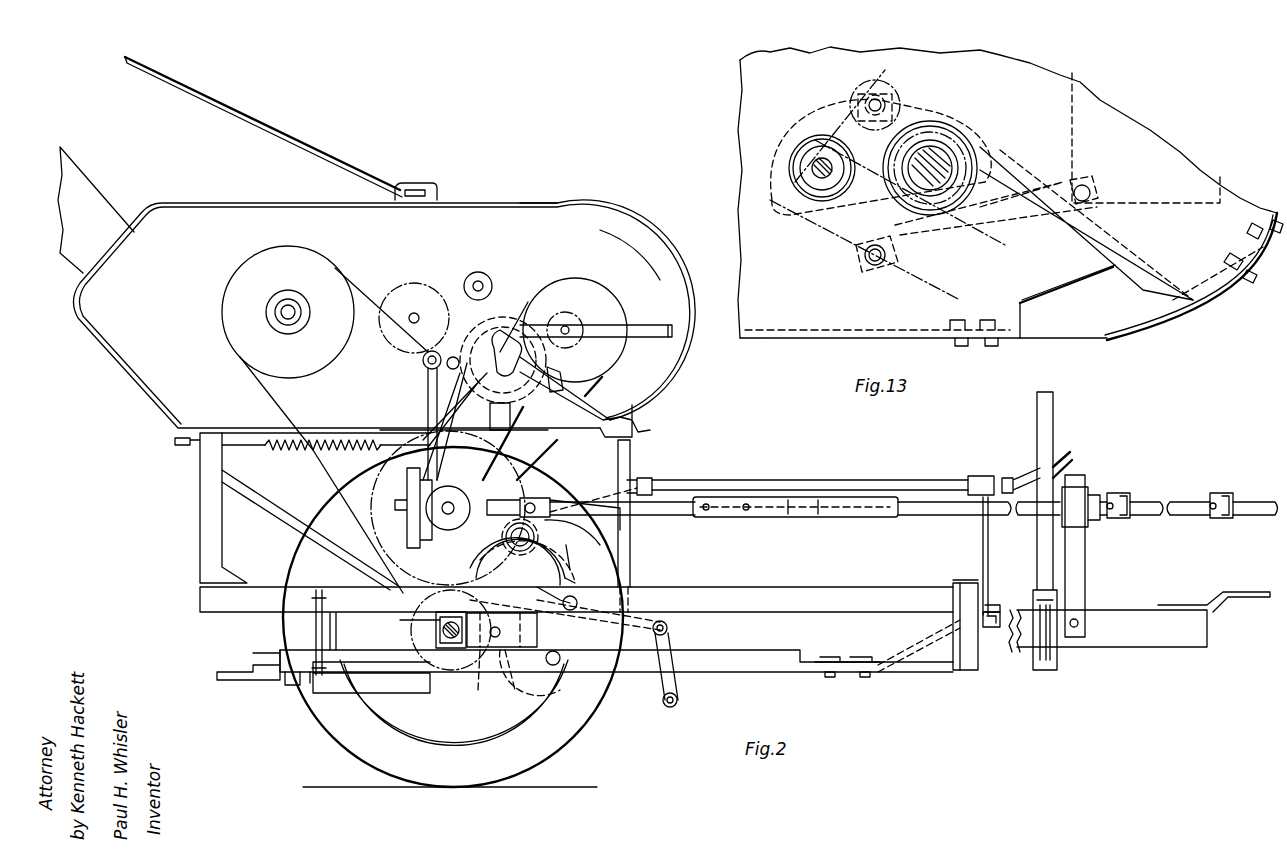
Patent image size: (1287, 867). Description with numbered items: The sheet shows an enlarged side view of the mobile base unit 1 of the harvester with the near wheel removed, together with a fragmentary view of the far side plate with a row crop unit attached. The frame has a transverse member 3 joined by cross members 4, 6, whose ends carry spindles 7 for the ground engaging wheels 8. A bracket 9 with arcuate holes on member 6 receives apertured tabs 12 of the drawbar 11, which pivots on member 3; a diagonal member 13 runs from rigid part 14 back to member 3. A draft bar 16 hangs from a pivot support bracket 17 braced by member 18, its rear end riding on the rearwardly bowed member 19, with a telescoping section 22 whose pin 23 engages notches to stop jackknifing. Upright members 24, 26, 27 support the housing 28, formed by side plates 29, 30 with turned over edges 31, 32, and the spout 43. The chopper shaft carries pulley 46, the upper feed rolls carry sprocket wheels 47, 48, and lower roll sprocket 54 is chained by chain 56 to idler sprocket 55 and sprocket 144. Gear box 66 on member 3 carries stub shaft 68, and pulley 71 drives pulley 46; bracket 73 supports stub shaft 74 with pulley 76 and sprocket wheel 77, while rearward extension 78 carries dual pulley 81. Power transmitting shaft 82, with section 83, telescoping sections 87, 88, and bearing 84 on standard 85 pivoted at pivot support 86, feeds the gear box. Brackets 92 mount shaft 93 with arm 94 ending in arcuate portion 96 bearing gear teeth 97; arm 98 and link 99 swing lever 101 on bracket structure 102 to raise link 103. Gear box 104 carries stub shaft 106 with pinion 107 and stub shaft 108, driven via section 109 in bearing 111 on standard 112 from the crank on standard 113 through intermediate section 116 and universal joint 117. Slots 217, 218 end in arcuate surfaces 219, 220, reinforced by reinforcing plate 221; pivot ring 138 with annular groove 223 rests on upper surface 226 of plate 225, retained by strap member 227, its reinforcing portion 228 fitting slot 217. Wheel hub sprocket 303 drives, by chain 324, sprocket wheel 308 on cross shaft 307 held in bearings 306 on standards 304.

In FIG. 2, the mobile base unit 1 is at (316, 496).
In FIG. 2, the transversely disposed parallel member 3 is at (415, 640).
In FIG. 2, the cross member 4 is at (785, 592).
In FIG. 2, the cross member 6 is at (952, 598).
In FIG. 2, the spindle 7 is at (460, 630).
In FIG. 2, the ground engaging wheel 8 is at (566, 738).
In FIG. 2, the bracket 9 is at (998, 606).
In FIG. 2, the drawbar 11 is at (1010, 648).
In FIG. 2, the apertured tab 12 is at (994, 628).
In FIG. 2, the diagonal member 13 is at (918, 672).
In FIG. 2, the rigid part 14 is at (964, 672).
In FIG. 2, the draft bar 16 is at (728, 672).
In FIG. 2, the pivot support bracket 17 is at (848, 672).
In FIG. 2, the brace member 18 is at (925, 633).
In FIG. 2, the rearwardly bowed member 19 is at (378, 693).
In FIG. 2, the telescoping section 22 is at (270, 650).
In FIG. 2, the lug or pin 23 is at (285, 688).
In FIG. 2, the upwardly extending member 24 is at (200, 503).
In FIG. 2, the upwardly extending member 26 is at (286, 528).
In FIG. 2, the upwardly extending member 27 is at (632, 455).
In FIG. 2, the housing 28 is at (206, 247).
In FIG. 13, the side plate member 29 is at (738, 268).
In FIG. 2, the side plate member 30 is at (540, 206).
In FIG. 13, the turned over edge portion 31 is at (842, 326).
In FIG. 2, the turned over edge portion 32 is at (605, 230).
In FIG. 2, the spout 43 is at (106, 195).
In FIG. 2, the pulley 46 is at (222, 310).
In FIG. 2, the sprocket wheel 47 is at (402, 288).
In FIG. 2, the sprocket wheel 48 is at (480, 272).
In FIG. 13, the sprocket 54 is at (790, 197).
In FIG. 13, the idler sprocket 55 is at (887, 82).
In FIG. 13, the chain 56 is at (838, 110).
In FIG. 2, the gear box 66 is at (412, 528).
In FIG. 2, the stub shaft 68 is at (520, 490).
In FIG. 2, the pulley 71 is at (395, 470).
In FIG. 2, the bracket 73 is at (645, 338).
In FIG. 2, the stub shaft 74 is at (582, 338).
In FIG. 2, the pulley 76 is at (582, 282).
In FIG. 2, the sprocket wheel 77 is at (568, 325).
In FIG. 2, the rearward extension 78 is at (548, 324).
In FIG. 2, the dual pulley 81 is at (503, 310).
In FIG. 2, the power transmitting shaft 82 is at (654, 516).
In FIG. 2, the universally connected section 83 is at (1176, 500).
In FIG. 2, the bearing 84 is at (1090, 492).
In FIG. 2, the standard 85 is at (1086, 562).
In FIG. 2, the pivot support 86 is at (1080, 624).
In FIG. 2, the telescoping section 87 is at (748, 518).
In FIG. 2, the telescoping section 88 is at (935, 517).
In FIG. 2, the rigid bracket 92 is at (489, 668).
In FIG. 2, the shaft 93 is at (517, 676).
In FIG. 2, the arm 94 is at (513, 630).
In FIG. 2, the arcuate portion 96 is at (572, 577).
In FIG. 2, the gear teeth 97 is at (579, 555).
In FIG. 2, the arm 98 is at (552, 678).
In FIG. 2, the link 99 is at (570, 635).
In FIG. 2, the lever 101 is at (668, 625).
In FIG. 2, the bracket structure 102 is at (400, 612).
In FIG. 2, the link 103 is at (660, 698).
In FIG. 2, the gear box 104 is at (586, 514).
In FIG. 2, the stub shaft 106 is at (536, 533).
In FIG. 2, the pinion 107 is at (522, 558).
In FIG. 2, the stub shaft 108 is at (626, 491).
In FIG. 2, the forwardly projecting section 109 is at (848, 479).
In FIG. 2, the bearing 111 is at (968, 476).
In FIG. 2, the standard 112 is at (988, 552).
In FIG. 2, the standard 113 is at (1055, 405).
In FIG. 2, the intermediate section 116 is at (1058, 460).
In FIG. 2, the universal joint 117 is at (1010, 478).
In FIG. 13, the pivot ring 138 is at (990, 152).
In FIG. 13, the sprocket 144 is at (946, 168).
In FIG. 13, the slot 217 is at (1122, 283).
In FIG. 2, the slot 218 is at (580, 405).
In FIG. 13, the arcuate pivot mounting surface 219 is at (872, 115).
In FIG. 2, the arcuate pivot mounting surface 220 is at (493, 388).
In FIG. 13, the reinforcing plate 221 is at (836, 220).
In FIG. 13, the annular groove 223 is at (872, 200).
In FIG. 13, the plate 225 is at (1165, 322).
In FIG. 13, the upper surface 226 is at (942, 213).
In FIG. 13, the strap member 227 is at (908, 262).
In FIG. 13, the reinforcing portion 228 is at (1050, 303).
In FIG. 2, the sprocket 303 is at (480, 662).
In FIG. 2, the standard 304 is at (440, 410).
In FIG. 2, the bearing 306 is at (422, 360).
In FIG. 2, the cross shaft 307 is at (426, 385).
In FIG. 2, the sprocket wheel 308 is at (468, 345).
In FIG. 2, the chain 324 is at (392, 415).